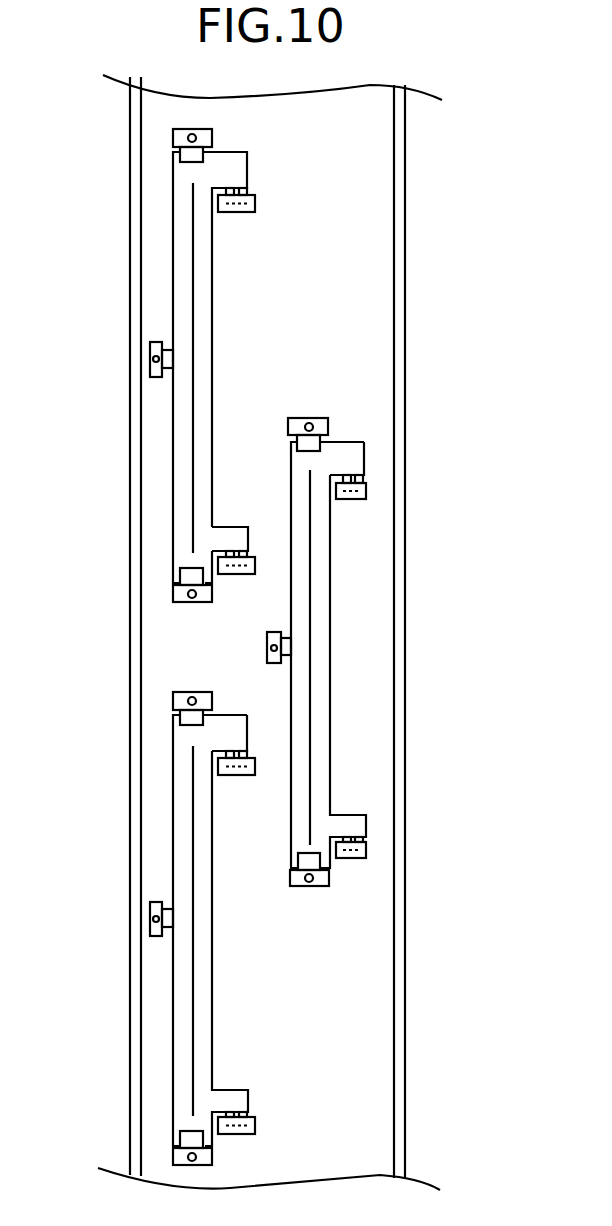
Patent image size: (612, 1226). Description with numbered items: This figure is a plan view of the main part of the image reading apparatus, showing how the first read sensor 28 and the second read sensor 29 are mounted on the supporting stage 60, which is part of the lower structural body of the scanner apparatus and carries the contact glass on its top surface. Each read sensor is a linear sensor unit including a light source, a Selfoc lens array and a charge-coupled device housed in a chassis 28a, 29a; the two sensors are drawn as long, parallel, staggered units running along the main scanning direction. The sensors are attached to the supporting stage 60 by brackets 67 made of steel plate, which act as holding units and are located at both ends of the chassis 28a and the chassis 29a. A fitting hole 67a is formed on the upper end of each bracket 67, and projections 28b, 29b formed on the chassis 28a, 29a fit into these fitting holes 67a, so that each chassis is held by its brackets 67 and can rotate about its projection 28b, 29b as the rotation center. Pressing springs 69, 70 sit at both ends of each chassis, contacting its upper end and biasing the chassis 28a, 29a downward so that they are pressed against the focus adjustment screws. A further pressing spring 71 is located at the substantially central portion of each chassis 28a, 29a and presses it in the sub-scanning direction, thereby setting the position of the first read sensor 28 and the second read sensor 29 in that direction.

The supporting stage 60 is at (405, 770).
The first read sensor 28 is at (177, 649).
The chassis 28a is at (173, 248).
The projection 28b is at (243, 551).
The second read sensor 29 is at (331, 655).
The chassis 29a is at (330, 668).
The projection 29b is at (355, 478).
The bracket 67 is at (247, 212).
The fitting hole 67a is at (258, 193).
The pressing spring 69 is at (180, 152).
The pressing spring 70 is at (180, 577).
The pressing spring 71 is at (150, 362).